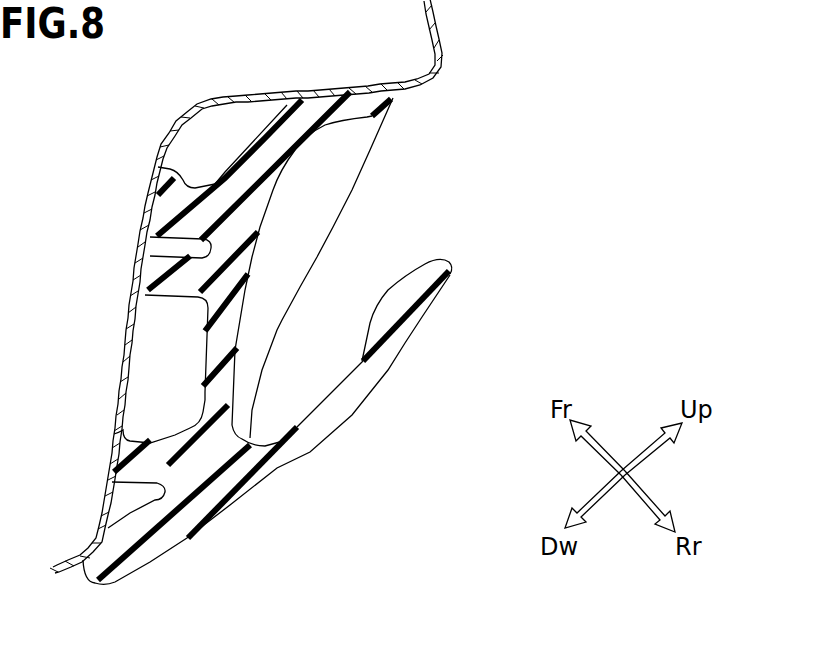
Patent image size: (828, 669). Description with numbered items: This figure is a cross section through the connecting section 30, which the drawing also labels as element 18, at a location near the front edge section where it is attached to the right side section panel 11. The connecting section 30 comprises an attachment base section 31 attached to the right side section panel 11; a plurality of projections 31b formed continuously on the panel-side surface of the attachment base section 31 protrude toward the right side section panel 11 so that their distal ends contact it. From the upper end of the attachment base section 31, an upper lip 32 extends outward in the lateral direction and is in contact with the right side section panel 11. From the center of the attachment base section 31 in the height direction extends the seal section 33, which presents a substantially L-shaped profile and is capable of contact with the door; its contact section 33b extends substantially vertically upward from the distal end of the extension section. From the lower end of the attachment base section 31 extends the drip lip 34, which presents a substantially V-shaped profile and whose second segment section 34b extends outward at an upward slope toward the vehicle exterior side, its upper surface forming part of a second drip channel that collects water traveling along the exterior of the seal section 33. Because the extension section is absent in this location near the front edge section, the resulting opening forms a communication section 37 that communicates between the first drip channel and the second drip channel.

The right side section panel 11 is at (447, 50).
The connecting section 30 is at (236, 154).
The trim member 18 is at (249, 149).
The upper lip 32 is at (288, 107).
The attachment base section 31 is at (202, 352).
The projections 31b is at (168, 168).
The communication section 37 is at (326, 367).
The seal section 33 is at (463, 310).
The contact section 33b is at (432, 307).
The drip lip 34 is at (275, 429).
The second segment section 34b is at (348, 418).